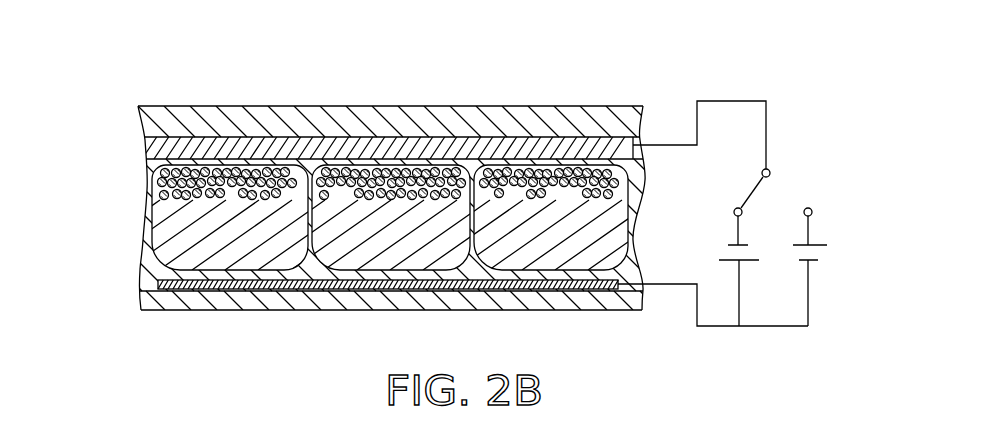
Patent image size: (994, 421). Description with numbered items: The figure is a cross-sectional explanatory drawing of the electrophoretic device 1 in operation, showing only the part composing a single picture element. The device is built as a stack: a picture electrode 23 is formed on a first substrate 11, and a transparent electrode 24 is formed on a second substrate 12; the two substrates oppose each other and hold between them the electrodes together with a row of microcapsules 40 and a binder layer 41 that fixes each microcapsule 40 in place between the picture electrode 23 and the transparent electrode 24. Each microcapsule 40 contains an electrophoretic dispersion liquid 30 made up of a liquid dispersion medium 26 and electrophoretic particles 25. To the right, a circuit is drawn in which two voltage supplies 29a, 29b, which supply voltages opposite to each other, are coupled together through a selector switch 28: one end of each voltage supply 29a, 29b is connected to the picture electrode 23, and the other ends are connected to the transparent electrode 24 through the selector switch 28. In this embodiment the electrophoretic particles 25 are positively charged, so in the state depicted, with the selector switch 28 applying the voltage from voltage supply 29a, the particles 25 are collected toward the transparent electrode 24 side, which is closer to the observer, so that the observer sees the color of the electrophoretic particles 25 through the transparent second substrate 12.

The electrophoretic device 1 is at (388, 192).
The first substrate 11 is at (217, 312).
The second substrate 12 is at (285, 110).
The picture electrode 23 is at (152, 285).
The transparent electrode 24 is at (507, 143).
The electrophoretic particle 25 is at (344, 128).
The liquid dispersion medium 26 is at (390, 163).
The selector switch 28 is at (759, 193).
The voltage supply 29a is at (730, 245).
The voltage supply 29b is at (825, 245).
The electrophoretic dispersion liquid 30 is at (390, 141).
The microcapsule 40 is at (147, 220).
The binder layer 41 is at (150, 175).